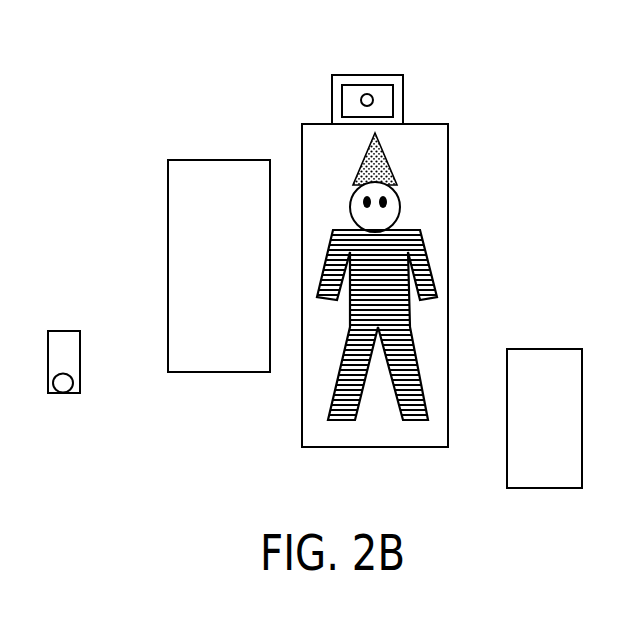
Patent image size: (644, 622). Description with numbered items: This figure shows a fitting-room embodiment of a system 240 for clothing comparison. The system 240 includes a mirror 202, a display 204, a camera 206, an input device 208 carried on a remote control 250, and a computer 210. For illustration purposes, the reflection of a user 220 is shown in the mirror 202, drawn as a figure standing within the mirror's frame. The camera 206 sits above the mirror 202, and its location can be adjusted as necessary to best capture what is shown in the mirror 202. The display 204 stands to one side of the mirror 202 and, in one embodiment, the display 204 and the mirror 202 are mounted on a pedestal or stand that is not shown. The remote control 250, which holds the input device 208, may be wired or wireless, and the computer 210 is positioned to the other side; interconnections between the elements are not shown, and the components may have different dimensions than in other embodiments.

The system 240 is at (124, 108).
The display 204 is at (217, 160).
The camera 206 is at (403, 102).
The mirror 202 is at (448, 160).
The user 220 is at (437, 270).
The computer 210 is at (570, 348).
The remote control 250 is at (63, 330).
The input device 208 is at (75, 380).